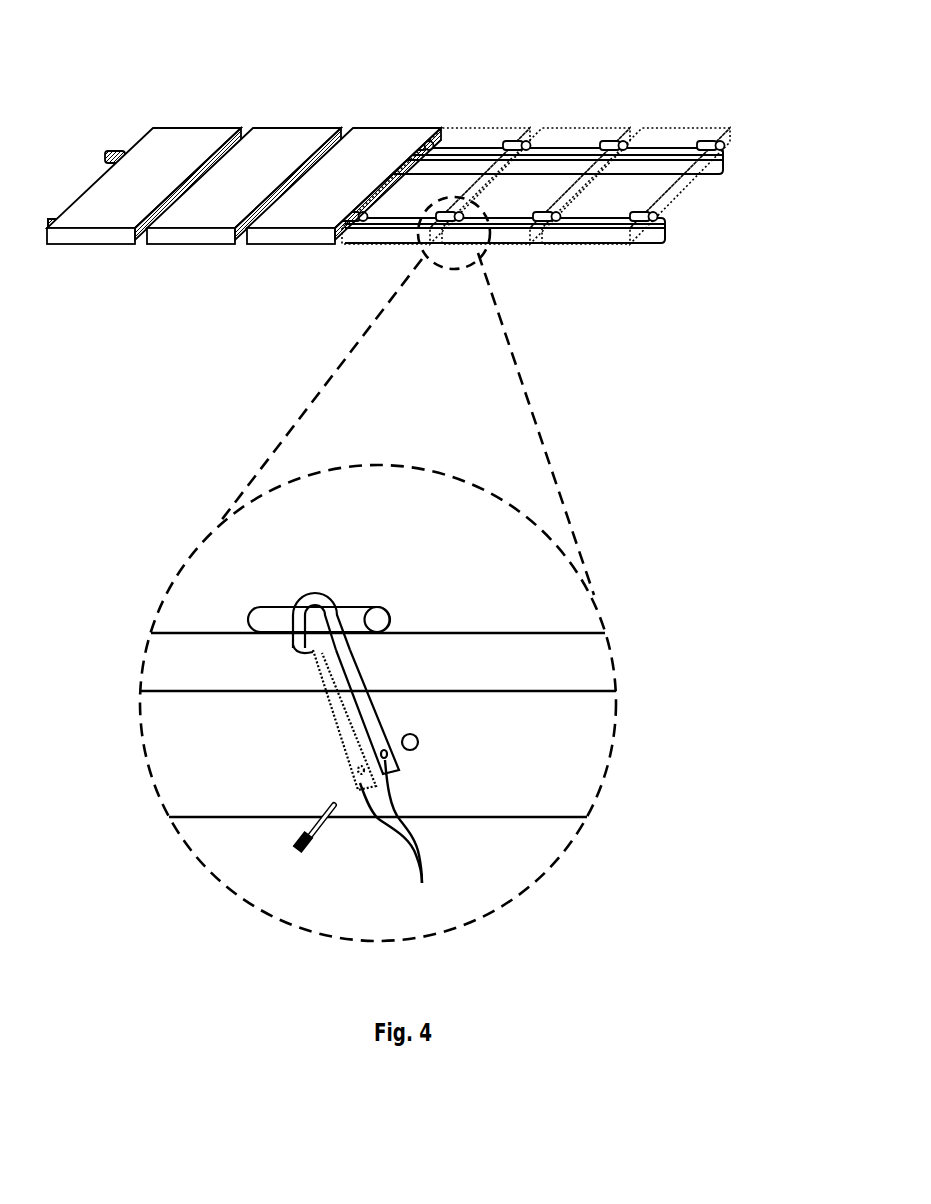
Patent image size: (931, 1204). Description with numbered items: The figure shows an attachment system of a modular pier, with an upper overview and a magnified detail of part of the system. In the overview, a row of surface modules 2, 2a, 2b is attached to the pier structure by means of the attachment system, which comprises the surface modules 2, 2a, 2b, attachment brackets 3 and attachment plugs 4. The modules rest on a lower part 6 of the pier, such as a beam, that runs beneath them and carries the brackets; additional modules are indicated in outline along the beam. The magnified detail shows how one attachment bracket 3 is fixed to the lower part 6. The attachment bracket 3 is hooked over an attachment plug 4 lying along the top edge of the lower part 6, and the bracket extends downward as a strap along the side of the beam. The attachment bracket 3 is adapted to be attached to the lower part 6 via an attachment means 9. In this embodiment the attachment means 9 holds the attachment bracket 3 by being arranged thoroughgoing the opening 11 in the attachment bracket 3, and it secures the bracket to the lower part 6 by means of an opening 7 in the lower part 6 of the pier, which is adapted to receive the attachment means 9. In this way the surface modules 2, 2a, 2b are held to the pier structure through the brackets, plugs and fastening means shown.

The surface modules 2 is at (244, 129).
The surface module 2a is at (144, 186).
The surface module 2b is at (165, 155).
The attachment bracket 3 is at (366, 702).
The attachment plug 4 is at (280, 618).
The lower part 6 is at (663, 238).
The opening 7 is at (411, 733).
The attachment means 9 is at (317, 833).
The opening 11 is at (398, 839).